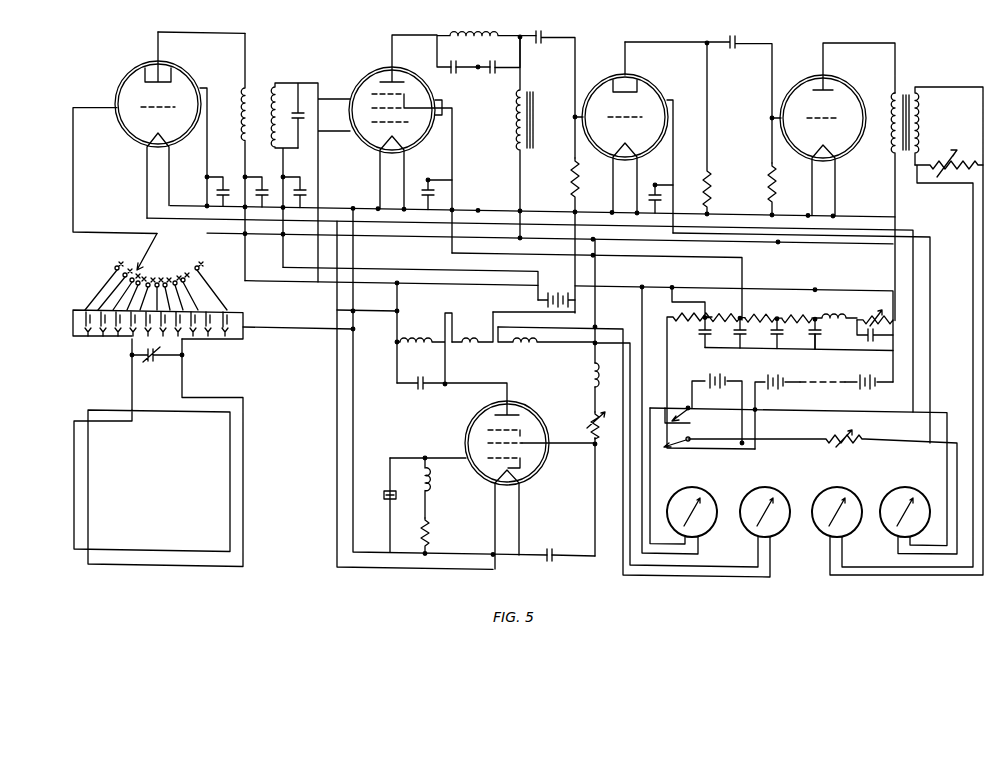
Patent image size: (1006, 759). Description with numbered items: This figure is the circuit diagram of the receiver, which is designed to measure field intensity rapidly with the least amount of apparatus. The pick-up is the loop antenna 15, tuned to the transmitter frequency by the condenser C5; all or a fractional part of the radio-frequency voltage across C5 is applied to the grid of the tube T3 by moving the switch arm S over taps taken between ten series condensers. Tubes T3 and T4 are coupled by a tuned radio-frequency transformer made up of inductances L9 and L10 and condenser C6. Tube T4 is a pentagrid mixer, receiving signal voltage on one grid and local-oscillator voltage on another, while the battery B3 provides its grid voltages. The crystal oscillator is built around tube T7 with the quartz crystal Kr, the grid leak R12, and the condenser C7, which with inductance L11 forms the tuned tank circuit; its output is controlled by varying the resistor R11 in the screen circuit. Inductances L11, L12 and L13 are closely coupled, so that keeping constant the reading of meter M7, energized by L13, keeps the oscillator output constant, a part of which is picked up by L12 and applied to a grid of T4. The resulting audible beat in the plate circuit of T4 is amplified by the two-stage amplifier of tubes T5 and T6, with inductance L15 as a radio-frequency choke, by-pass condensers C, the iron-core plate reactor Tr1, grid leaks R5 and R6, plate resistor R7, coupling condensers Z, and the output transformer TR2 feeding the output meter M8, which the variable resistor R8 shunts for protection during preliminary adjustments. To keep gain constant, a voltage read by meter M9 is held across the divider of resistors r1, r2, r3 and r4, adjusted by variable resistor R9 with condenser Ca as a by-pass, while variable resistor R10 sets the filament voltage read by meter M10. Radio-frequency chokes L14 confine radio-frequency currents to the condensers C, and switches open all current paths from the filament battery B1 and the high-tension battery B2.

The tube T3 is at (159, 133).
The tube T4 is at (400, 144).
The tube T5 is at (624, 137).
The tube T6 is at (833, 129).
The tube T7 is at (492, 478).
The iron-core plate reactor Tr1 is at (531, 137).
The output transformer TR2 is at (906, 322).
The inductance L9 is at (234, 156).
The inductance L10 is at (291, 167).
The inductance L11 is at (424, 348).
The inductance L12 is at (472, 338).
The inductance L13 is at (546, 346).
The radio-frequency choke L14 is at (640, 408).
The inductance L15 is at (486, 42).
The radio-frequency by-pass condenser C is at (517, 304).
The condenser C5 is at (157, 359).
The condenser C6 is at (308, 116).
The condenser C7 is at (452, 392).
The condenser Ca is at (799, 335).
The coupling condenser Z is at (654, 91).
The grid leak R5 is at (562, 214).
The grid leak R6 is at (760, 165).
The plate resistor R7 is at (717, 128).
The variable resistor R8 is at (912, 353).
The variable resistor R9 is at (875, 337).
The variable resistor R10 is at (803, 481).
The resistor R11 is at (583, 425).
The grid leak R12 is at (444, 535).
The resistor r1 is at (711, 368).
The resistor r2 is at (725, 325).
The resistor r3 is at (763, 310).
The resistor r4 is at (760, 311).
The filament battery B1 is at (753, 389).
The high-tension battery B2 is at (823, 412).
The battery B3 is at (560, 308).
The quartz crystal Kr is at (381, 505).
The switch arm S is at (381, 341).
The loop antenna 15 is at (88, 497).
The meter M7 is at (765, 512).
The output meter M8 is at (837, 512).
The meter M9 is at (692, 512).
The meter M10 is at (905, 512).